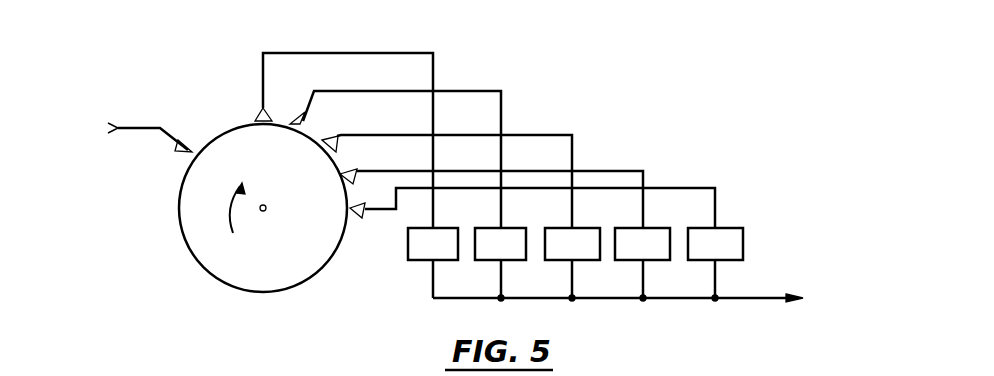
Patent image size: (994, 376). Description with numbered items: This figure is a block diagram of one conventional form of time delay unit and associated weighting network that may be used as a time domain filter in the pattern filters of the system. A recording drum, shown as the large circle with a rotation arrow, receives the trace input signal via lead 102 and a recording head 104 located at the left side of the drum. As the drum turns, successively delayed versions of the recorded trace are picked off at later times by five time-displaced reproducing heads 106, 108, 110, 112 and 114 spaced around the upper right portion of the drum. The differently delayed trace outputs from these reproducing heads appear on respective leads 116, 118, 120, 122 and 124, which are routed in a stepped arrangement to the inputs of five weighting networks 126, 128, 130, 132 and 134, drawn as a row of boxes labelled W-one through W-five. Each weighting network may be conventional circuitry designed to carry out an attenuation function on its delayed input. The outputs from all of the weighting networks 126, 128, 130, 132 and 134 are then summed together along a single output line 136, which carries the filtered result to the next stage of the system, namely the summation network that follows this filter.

The lead 102 is at (124, 130).
The recording head 104 is at (188, 143).
The reproducing head 106 is at (265, 108).
The reproducing head 108 is at (303, 122).
The reproducing head 110 is at (335, 142).
The reproducing head 112 is at (340, 174).
The reproducing head 114 is at (357, 212).
The lead 116 is at (287, 50).
The lead 118 is at (437, 88).
The lead 120 is at (505, 132).
The lead 122 is at (575, 169).
The lead 124 is at (650, 186).
The weighting network 126 is at (410, 261).
The weighting network 128 is at (488, 261).
The weighting network 130 is at (556, 261).
The weighting network 132 is at (627, 261).
The weighting network 134 is at (697, 261).
The output line 136 is at (775, 296).